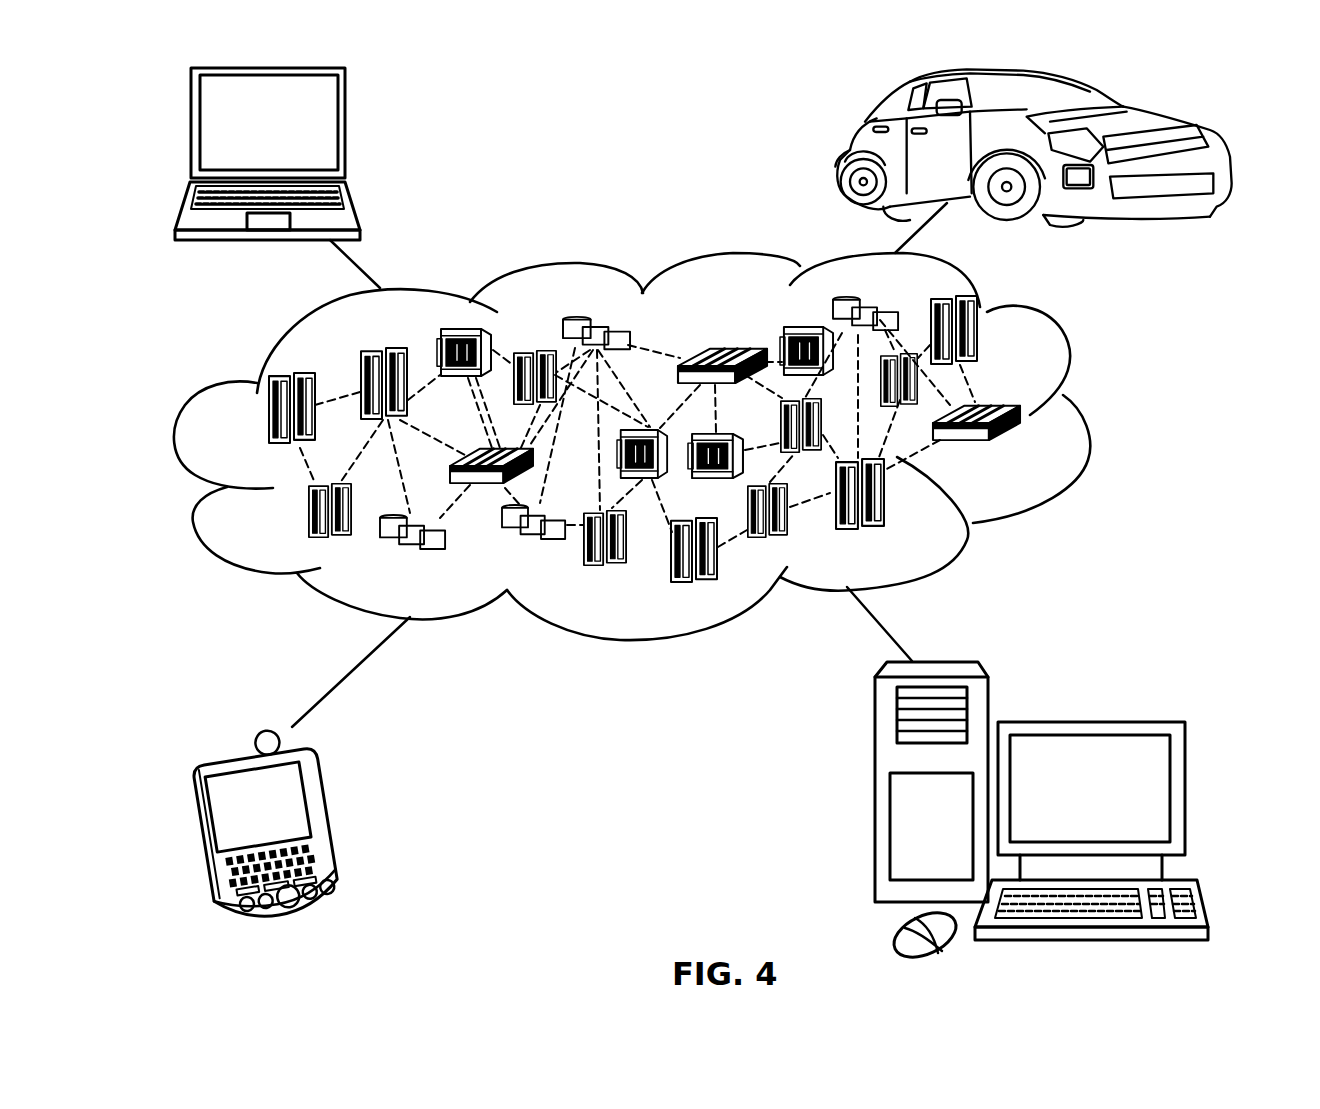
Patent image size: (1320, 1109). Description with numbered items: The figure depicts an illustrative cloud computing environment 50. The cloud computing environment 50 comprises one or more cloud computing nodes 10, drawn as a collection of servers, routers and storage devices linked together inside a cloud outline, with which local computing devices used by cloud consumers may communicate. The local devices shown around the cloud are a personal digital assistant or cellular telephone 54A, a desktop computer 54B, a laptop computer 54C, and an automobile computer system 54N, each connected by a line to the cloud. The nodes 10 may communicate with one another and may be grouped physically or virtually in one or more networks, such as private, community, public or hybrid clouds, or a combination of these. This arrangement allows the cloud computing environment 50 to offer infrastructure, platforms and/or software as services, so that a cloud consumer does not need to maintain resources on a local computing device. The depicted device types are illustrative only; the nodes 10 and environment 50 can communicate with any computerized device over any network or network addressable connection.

The cloud computing node 10 is at (1020, 450).
The cloud computing environment 50 is at (1088, 418).
The personal digital assistant or cellular telephone 54A is at (337, 818).
The desktop computer 54B is at (1090, 721).
The laptop computer 54C is at (347, 133).
The automobile computer system 54N is at (840, 150).